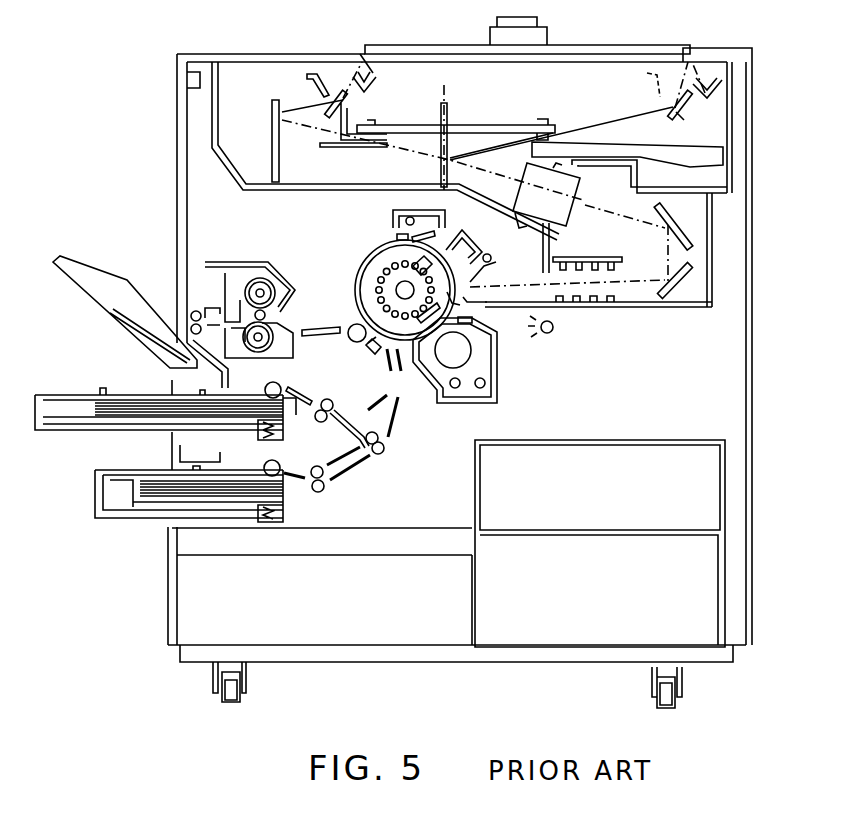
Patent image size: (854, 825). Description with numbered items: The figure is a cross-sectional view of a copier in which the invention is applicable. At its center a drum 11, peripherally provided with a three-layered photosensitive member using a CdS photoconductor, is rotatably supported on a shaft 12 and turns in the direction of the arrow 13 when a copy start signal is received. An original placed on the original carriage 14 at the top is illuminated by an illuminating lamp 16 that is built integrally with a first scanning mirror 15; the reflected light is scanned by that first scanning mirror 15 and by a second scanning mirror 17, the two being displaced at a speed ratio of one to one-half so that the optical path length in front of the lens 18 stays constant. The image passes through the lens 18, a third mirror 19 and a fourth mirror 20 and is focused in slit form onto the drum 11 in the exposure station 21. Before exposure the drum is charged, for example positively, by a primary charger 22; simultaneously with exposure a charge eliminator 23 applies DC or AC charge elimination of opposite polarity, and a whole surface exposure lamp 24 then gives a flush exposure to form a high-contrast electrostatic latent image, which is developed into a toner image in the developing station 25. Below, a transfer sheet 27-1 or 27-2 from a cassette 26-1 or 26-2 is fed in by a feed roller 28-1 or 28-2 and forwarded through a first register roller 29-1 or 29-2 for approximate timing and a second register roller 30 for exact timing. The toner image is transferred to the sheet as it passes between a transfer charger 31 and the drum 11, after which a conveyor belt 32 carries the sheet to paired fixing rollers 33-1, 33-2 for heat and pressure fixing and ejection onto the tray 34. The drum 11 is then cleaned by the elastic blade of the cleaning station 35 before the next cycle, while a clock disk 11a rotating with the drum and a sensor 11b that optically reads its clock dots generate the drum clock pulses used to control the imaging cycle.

The original carriage 14 is at (568, 52).
The illuminating lamp 16 is at (366, 79).
The first scanning mirror 15 is at (347, 100).
The second scanning mirror 17 is at (281, 168).
The cleaning station 35 is at (428, 222).
The sensor 11b is at (398, 238).
The clock disk 11a is at (405, 265).
The drum 11 is at (372, 273).
The shaft 12 is at (398, 290).
The arrow 13 is at (430, 315).
The primary charger 22 is at (470, 249).
The charge eliminator 23 is at (491, 257).
The lens 18 is at (572, 213).
The third mirror 19 is at (683, 236).
The fourth mirror 20 is at (668, 298).
The exposure station 21 is at (488, 304).
The whole surface exposure lamp 24 is at (556, 331).
The tray 34 is at (102, 280).
The fixing roller 33-1 is at (241, 258).
The conveyor belt 32 is at (322, 317).
The fixing roller 33-2 is at (283, 345).
The transfer charger 31 is at (368, 346).
The transfer sheet 27-1 is at (138, 404).
The cassette 26-1 is at (37, 425).
The feed roller 28-1 is at (275, 382).
The first register roller 29-1 is at (325, 403).
The developing station 25 is at (422, 393).
The transfer sheet 27-2 is at (157, 485).
The cassette 26-2 is at (100, 513).
The feed roller 28-2 is at (277, 462).
The first register roller 29-2 is at (322, 492).
The second register roller 30 is at (378, 455).